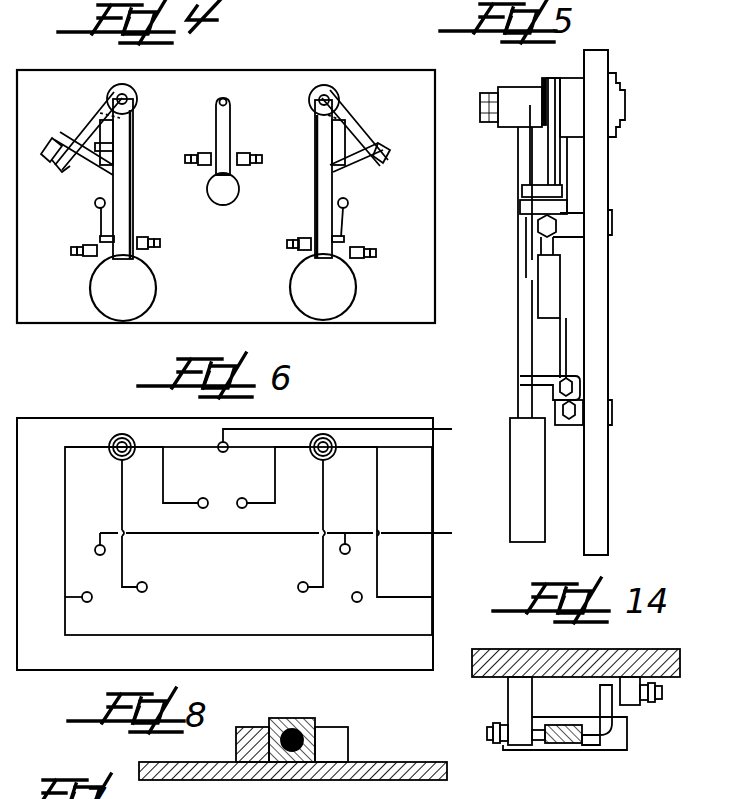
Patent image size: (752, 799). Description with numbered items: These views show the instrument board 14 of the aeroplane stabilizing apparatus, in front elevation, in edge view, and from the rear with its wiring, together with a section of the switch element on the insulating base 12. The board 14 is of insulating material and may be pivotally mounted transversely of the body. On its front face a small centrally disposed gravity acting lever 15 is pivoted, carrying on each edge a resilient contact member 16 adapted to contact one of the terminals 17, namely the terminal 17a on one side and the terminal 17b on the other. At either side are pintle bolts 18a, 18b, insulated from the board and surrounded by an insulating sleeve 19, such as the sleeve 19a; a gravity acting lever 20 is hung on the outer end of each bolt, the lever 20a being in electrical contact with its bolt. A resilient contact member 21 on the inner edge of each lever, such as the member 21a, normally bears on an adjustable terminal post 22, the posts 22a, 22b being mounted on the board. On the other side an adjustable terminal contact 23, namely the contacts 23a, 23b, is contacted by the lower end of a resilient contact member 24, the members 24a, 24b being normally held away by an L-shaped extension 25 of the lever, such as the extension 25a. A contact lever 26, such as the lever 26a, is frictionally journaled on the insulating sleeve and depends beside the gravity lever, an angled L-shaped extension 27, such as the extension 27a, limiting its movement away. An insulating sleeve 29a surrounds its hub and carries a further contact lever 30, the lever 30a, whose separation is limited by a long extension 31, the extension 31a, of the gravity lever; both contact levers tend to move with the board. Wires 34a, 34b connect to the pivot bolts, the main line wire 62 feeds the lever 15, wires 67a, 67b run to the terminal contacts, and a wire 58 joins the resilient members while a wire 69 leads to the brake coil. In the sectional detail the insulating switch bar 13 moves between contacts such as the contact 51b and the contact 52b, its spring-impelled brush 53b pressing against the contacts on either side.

In FIG. 8, the insulating base 12 is at (368, 762).
In FIG. 4, the switch bar 13 is at (402, 130).
In FIG. 4, the instrument board 14 is at (226, 196).
In FIG. 5, the instrument board 14 is at (598, 520).
In FIG. 6, the instrument board 14 is at (225, 544).
In FIG. 14, the instrument board 14 is at (634, 649).
In FIG. 4, the gravity acting lever 15 is at (227, 128).
In FIG. 5, the gravity acting lever 15 is at (546, 297).
In FIG. 6, the gravity acting lever 15 is at (226, 450).
In FIG. 4, the resilient contact member 16 is at (256, 137).
In FIG. 4, the terminal 17 is at (204, 165).
In FIG. 5, the terminal 17a is at (556, 232).
In FIG. 6, the terminal 17a is at (203, 498).
In FIG. 6, the terminal 17b is at (244, 507).
In FIG. 5, the pintle bolt 18a is at (487, 122).
In FIG. 6, the pintle bolt 18a is at (118, 433).
In FIG. 6, the pintle bolt 18b is at (326, 434).
In FIG. 4, the insulating sleeve 19 is at (320, 88).
In FIG. 5, the insulating sleeve 19a is at (541, 85).
In FIG. 4, the gravity acting lever 20 is at (223, 287).
In FIG. 5, the gravity acting lever 20a is at (565, 350).
In FIG. 14, the gravity acting lever 20a is at (575, 743).
In FIG. 4, the resilient contact member 21 is at (133, 224).
In FIG. 4, the resilient contact member 21a is at (315, 207).
In FIG. 5, the resilient contact member 21a is at (520, 252).
In FIG. 14, the resilient contact member 21a is at (538, 745).
In FIG. 4, the adjustable terminal post 22 is at (143, 249).
In FIG. 4, the adjustable terminal post 22a is at (298, 252).
In FIG. 6, the adjustable terminal post 22a is at (147, 587).
In FIG. 14, the adjustable terminal post 22a is at (503, 745).
In FIG. 6, the adjustable terminal post 22b is at (298, 587).
In FIG. 4, the adjustable terminal contact 23 is at (88, 256).
In FIG. 4, the adjustable terminal contact 23a is at (358, 258).
In FIG. 5, the adjustable terminal contact 23a is at (575, 425).
In FIG. 6, the adjustable terminal contact 23a is at (100, 606).
In FIG. 14, the adjustable terminal contact 23a is at (640, 700).
In FIG. 6, the adjustable terminal contact 23b is at (358, 602).
In FIG. 4, the resilient contact member 24 is at (100, 216).
In FIG. 4, the resilient contact member 24a is at (345, 212).
In FIG. 5, the resilient contact member 24a is at (566, 366).
In FIG. 6, the resilient contact member 24a is at (95, 548).
In FIG. 14, the resilient contact member 24a is at (597, 692).
In FIG. 6, the resilient contact member 24b is at (348, 554).
In FIG. 4, the L-shaped extension 25 is at (100, 239).
In FIG. 4, the L-shaped extension 25a is at (344, 240).
In FIG. 5, the L-shaped extension 25a is at (540, 385).
In FIG. 14, the L-shaped extension 25a is at (605, 735).
In FIG. 4, the contact lever 26 is at (102, 128).
In FIG. 4, the contact lever 26a is at (338, 118).
In FIG. 5, the contact lever 26a is at (548, 170).
In FIG. 4, the angled L-shaped extension 27 is at (98, 145).
In FIG. 4, the angled L-shaped extension 27a is at (345, 172).
In FIG. 5, the angled L-shaped extension 27a is at (551, 207).
In FIG. 5, the insulating sleeve 29a is at (557, 88).
In FIG. 4, the contact lever 30 is at (94, 128).
In FIG. 4, the contact lever 30a is at (370, 120).
In FIG. 5, the contact lever 30a is at (562, 155).
In FIG. 4, the long extension 31 is at (60, 152).
In FIG. 4, the long extension 31a is at (386, 160).
In FIG. 5, the long extension 31a is at (526, 240).
In FIG. 6, the wire 34a is at (163, 470).
In FIG. 6, the wire 34b is at (302, 450).
In FIG. 8, the contact 51b is at (248, 727).
In FIG. 8, the contact 52b is at (340, 745).
In FIG. 8, the brush 53b is at (286, 718).
In FIG. 6, the wire 58 is at (215, 540).
In FIG. 6, the main line wire 62 is at (437, 430).
In FIG. 6, the wire 67a is at (460, 636).
In FIG. 6, the wire 67b is at (445, 597).
In FIG. 6, the wire 69 is at (447, 533).